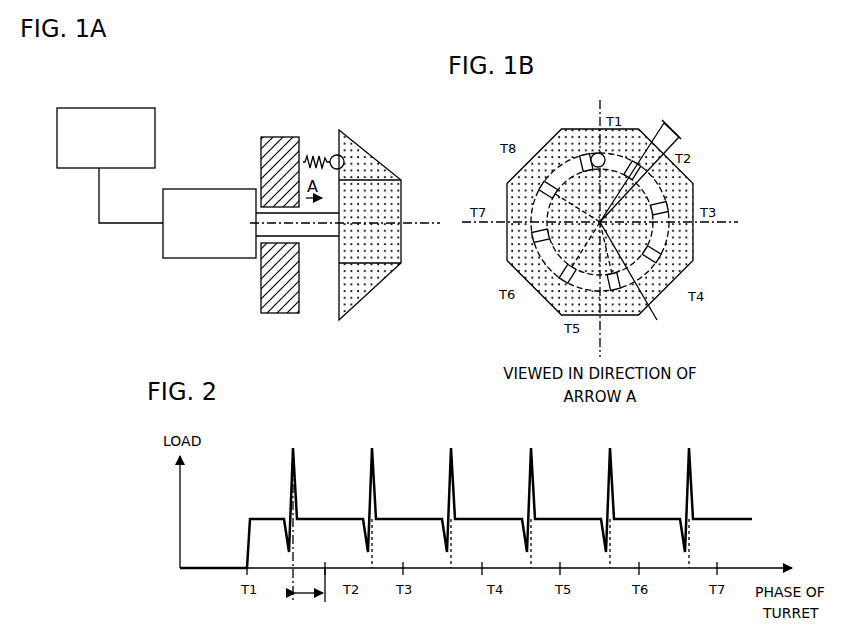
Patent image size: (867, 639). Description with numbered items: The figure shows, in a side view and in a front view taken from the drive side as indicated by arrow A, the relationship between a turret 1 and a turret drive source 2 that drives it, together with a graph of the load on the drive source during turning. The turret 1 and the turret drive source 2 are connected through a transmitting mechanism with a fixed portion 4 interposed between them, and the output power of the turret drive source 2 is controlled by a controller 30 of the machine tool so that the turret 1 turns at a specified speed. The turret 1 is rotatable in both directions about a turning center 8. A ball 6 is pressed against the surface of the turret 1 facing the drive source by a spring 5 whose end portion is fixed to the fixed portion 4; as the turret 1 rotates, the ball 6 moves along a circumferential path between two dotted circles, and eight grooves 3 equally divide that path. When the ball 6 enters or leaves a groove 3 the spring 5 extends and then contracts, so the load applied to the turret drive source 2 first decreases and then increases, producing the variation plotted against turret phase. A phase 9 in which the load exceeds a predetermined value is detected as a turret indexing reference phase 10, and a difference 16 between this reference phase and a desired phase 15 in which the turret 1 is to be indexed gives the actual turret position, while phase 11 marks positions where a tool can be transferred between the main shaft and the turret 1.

In FIG. 1A, the turret 1 is at (372, 155).
In FIG. 1B, the turret 1 is at (507, 184).
In FIG. 1A, the turret drive source 2 is at (198, 189).
In FIG. 1A, the groove 3 is at (342, 158).
In FIG. 1B, the groove 3 is at (536, 236).
In FIG. 1A, the fixed portion 4 is at (277, 313).
In FIG. 1A, the spring 5 is at (312, 154).
In FIG. 1A, the ball 6 is at (343, 156).
In FIG. 1B, the ball 6 is at (595, 154).
In FIG. 1B, the turning center 8 is at (633, 283).
In FIG. 1B, the phase 9 is at (639, 152).
In FIG. 2, the phase 9 is at (266, 538).
In FIG. 1B, the turret indexing reference phase 10 is at (658, 133).
In FIG. 2, the turret indexing reference phase 10 is at (292, 578).
In FIG. 1B, the phase 11 is at (632, 244).
In FIG. 2, the phase 11 is at (247, 566).
In FIG. 1B, the desired phase 15 is at (694, 184).
In FIG. 2, the desired phase 15 is at (326, 568).
In FIG. 1B, the difference 16 is at (678, 137).
In FIG. 2, the difference 16 is at (310, 596).
In FIG. 1A, the controller 30 is at (104, 106).